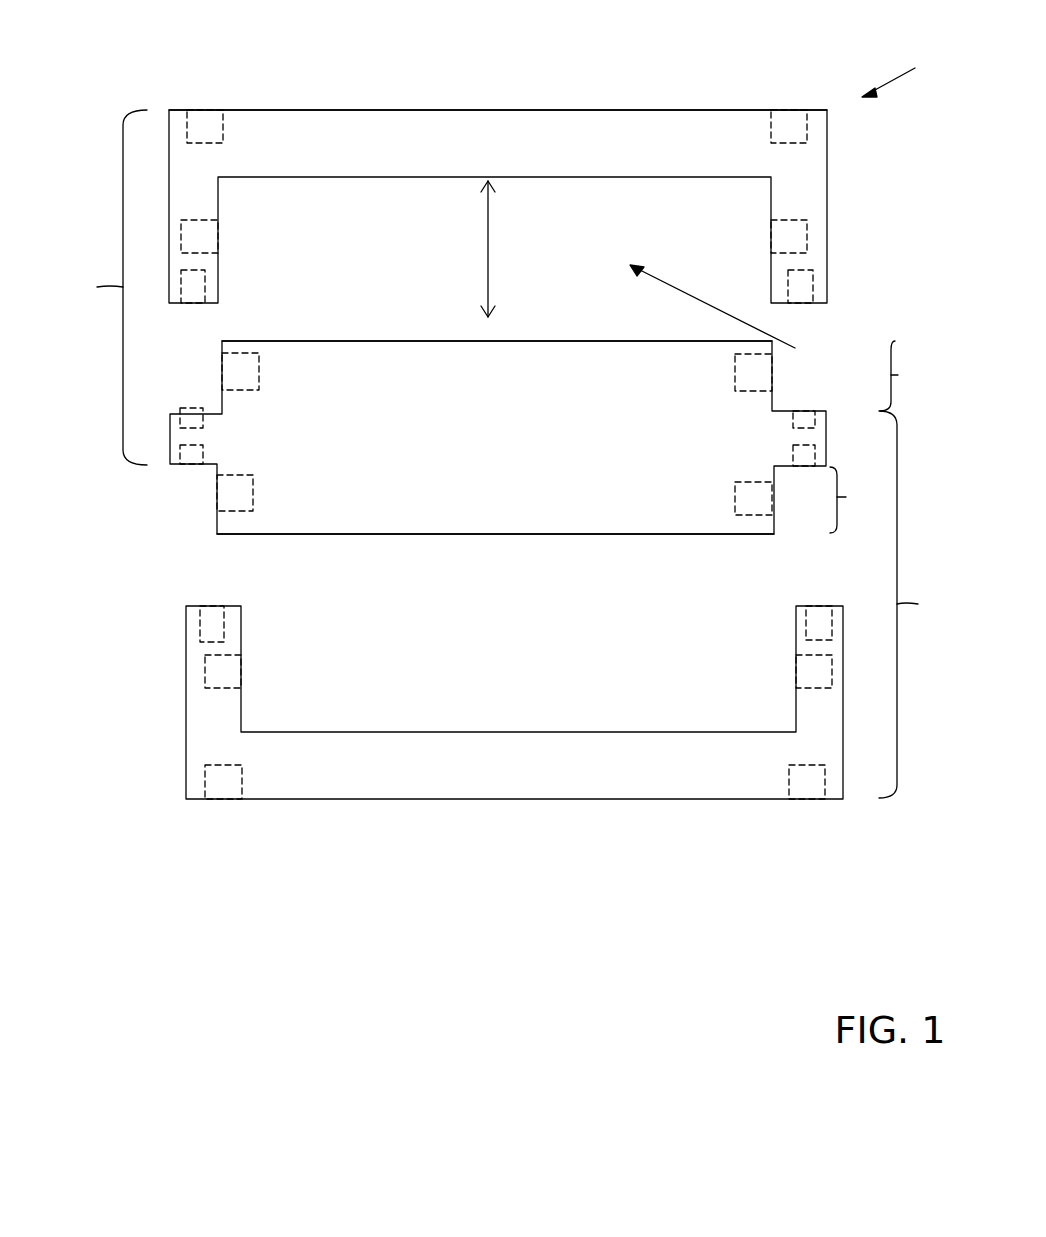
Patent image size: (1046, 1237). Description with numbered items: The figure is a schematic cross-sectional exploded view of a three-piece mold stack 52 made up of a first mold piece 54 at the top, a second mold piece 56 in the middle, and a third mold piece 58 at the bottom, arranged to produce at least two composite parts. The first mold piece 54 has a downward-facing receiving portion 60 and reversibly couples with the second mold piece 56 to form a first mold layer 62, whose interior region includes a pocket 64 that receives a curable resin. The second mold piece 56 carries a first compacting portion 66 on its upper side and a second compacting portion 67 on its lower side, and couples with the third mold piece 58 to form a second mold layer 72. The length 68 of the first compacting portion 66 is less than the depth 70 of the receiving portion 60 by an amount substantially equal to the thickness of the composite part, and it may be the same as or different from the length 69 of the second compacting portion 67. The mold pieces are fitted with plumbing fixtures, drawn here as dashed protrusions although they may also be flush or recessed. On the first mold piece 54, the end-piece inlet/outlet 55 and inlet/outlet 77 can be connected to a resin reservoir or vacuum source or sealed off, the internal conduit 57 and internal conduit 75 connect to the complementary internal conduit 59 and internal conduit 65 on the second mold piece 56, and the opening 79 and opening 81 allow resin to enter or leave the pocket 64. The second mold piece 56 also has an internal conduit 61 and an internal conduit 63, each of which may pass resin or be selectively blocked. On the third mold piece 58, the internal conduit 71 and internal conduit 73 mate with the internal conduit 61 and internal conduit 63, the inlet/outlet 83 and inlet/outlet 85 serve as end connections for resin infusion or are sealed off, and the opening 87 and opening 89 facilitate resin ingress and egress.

The mold stack 52 is at (892, 60).
The first mold piece 54 is at (827, 180).
The inlet/outlet 55 is at (213, 110).
The second mold piece 56 is at (826, 440).
The internal conduit 57 is at (197, 304).
The third mold piece 58 is at (843, 700).
The internal conduit 59 is at (185, 408).
The receiving portion 60 is at (516, 110).
The internal conduit 61 is at (192, 465).
The first mold layer 62 is at (93, 287).
The internal conduit 63 is at (792, 452).
The pocket 64 is at (730, 309).
The internal conduit 65 is at (790, 427).
The first compacting portion 66 is at (413, 341).
The second compacting portion 67 is at (447, 535).
The length 68 is at (906, 376).
The length 69 is at (853, 500).
The depth 70 is at (503, 249).
The internal conduit 71 is at (208, 606).
The second mold layer 72 is at (920, 604).
The internal conduit 73 is at (817, 606).
The internal conduit 75 is at (803, 305).
The inlet/outlet 77 is at (782, 110).
The opening 79 is at (218, 237).
The opening 81 is at (771, 233).
The inlet/outlet 83 is at (221, 800).
The inlet/outlet 85 is at (800, 800).
The opening 87 is at (241, 671).
The opening 89 is at (796, 670).